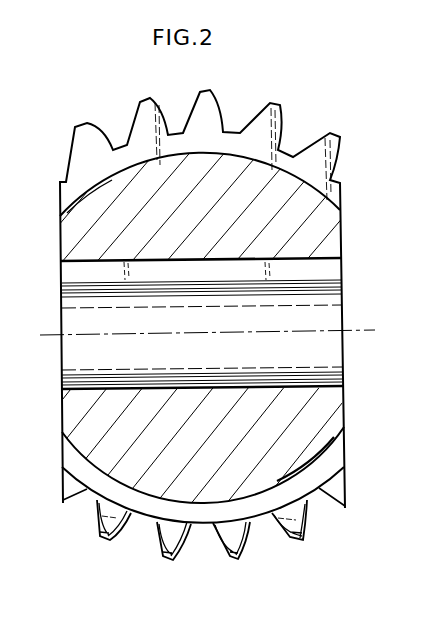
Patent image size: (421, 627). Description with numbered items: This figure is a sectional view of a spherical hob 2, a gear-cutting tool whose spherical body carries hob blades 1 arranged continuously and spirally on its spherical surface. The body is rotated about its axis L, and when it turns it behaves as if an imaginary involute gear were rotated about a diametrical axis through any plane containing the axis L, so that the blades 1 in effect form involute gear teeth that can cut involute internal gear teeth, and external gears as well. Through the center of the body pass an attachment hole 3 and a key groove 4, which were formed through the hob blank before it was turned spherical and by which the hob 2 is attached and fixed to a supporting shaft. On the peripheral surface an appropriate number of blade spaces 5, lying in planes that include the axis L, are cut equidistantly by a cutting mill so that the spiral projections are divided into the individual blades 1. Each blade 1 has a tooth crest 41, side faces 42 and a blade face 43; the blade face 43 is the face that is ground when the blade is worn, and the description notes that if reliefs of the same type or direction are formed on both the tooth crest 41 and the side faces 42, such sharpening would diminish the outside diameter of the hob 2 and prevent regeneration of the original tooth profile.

The hob blade 1 is at (252, 119).
The spherical hob 2 is at (340, 246).
The attachment hole 3 is at (333, 383).
The key groove 4 is at (330, 269).
The blade space 5 is at (335, 210).
The tooth crest 41 is at (158, 553).
The side face 42 is at (228, 553).
The blade face 43 is at (152, 104).
The axis L is at (353, 328).